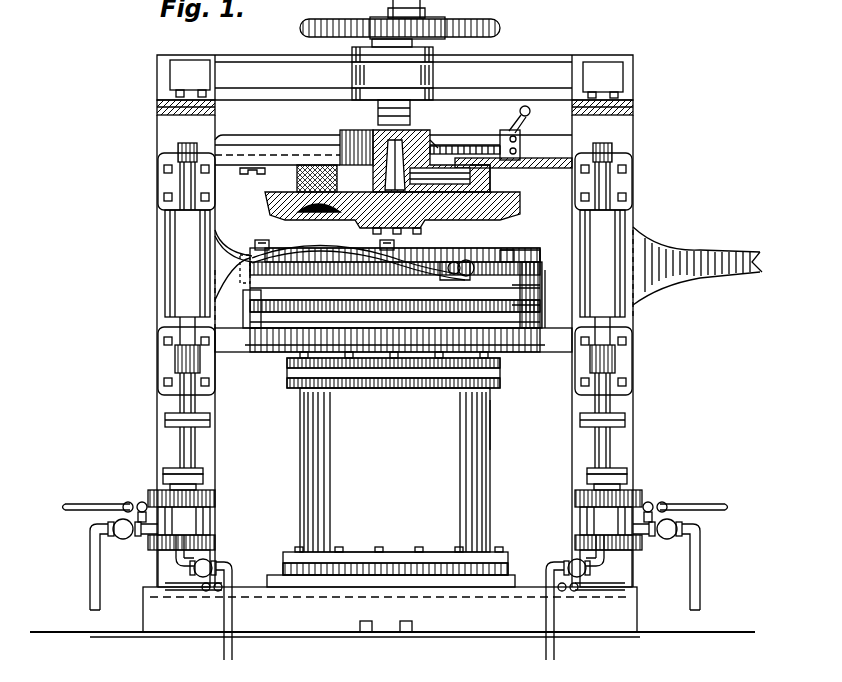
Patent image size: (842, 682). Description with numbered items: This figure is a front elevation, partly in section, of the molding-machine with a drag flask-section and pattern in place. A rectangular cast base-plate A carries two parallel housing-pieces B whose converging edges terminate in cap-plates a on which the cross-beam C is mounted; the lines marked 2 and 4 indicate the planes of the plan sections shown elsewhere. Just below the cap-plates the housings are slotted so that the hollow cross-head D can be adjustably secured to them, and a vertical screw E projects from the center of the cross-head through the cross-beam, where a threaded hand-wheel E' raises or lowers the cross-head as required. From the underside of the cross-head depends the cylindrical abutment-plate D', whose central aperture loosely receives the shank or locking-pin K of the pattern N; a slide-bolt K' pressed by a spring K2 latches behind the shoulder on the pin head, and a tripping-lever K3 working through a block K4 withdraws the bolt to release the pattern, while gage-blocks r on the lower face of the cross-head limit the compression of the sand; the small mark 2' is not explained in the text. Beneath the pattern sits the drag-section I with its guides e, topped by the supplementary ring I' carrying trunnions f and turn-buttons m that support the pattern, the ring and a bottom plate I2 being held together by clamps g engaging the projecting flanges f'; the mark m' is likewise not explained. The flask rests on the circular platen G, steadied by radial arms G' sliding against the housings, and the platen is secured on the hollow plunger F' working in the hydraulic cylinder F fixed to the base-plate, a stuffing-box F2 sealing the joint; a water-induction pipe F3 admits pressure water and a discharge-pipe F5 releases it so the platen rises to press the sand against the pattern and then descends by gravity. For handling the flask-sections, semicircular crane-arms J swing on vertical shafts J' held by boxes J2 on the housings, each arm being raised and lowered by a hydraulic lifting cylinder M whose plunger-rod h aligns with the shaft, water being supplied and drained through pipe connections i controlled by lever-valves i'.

The base-plate A is at (392, 612).
The housing-pieces B is at (155, 444).
The cross-beam C is at (543, 66).
The cap-plates a is at (157, 104).
The section line 2 2 is at (397, 137).
The section line 4 4 is at (157, 345).
The vertical screw E is at (414, 9).
The hand-wheel E' is at (406, 71).
The cross-head D is at (393, 144).
The abutment-plate D' is at (286, 186).
The small part 2' is at (266, 177).
The shank or locking-pin K is at (409, 151).
The slide-bolt K' is at (447, 129).
The spring K2 is at (462, 146).
The block K4 is at (512, 133).
The tripping-lever K3 is at (528, 128).
The gage-blocks r is at (485, 178).
The pattern N is at (520, 212).
The drag-section I is at (404, 288).
The supplementary ring I' is at (527, 240).
The bottom plate I2 is at (307, 330).
The guides e is at (418, 252).
The turn-buttons m is at (324, 237).
The bolt m' is at (519, 241).
The trunnions f is at (463, 256).
The projecting flanges f' is at (537, 290).
The clamps g is at (250, 320).
The platen G is at (394, 376).
The radial arms G' is at (393, 358).
The cylinder F is at (391, 487).
The plunger F' is at (393, 382).
The stuffing-box F2 is at (492, 430).
The water-induction pipe F3 is at (428, 615).
The discharge-pipe F5 is at (361, 624).
The crane-arms J is at (488, 260).
The vertical shafts J' is at (418, 303).
The boxes J2 is at (176, 171).
The plunger-rod h is at (200, 457).
The cylinder M is at (215, 520).
The inlet and outlet pipe connections i is at (395, 569).
The lever-valves i' is at (395, 581).